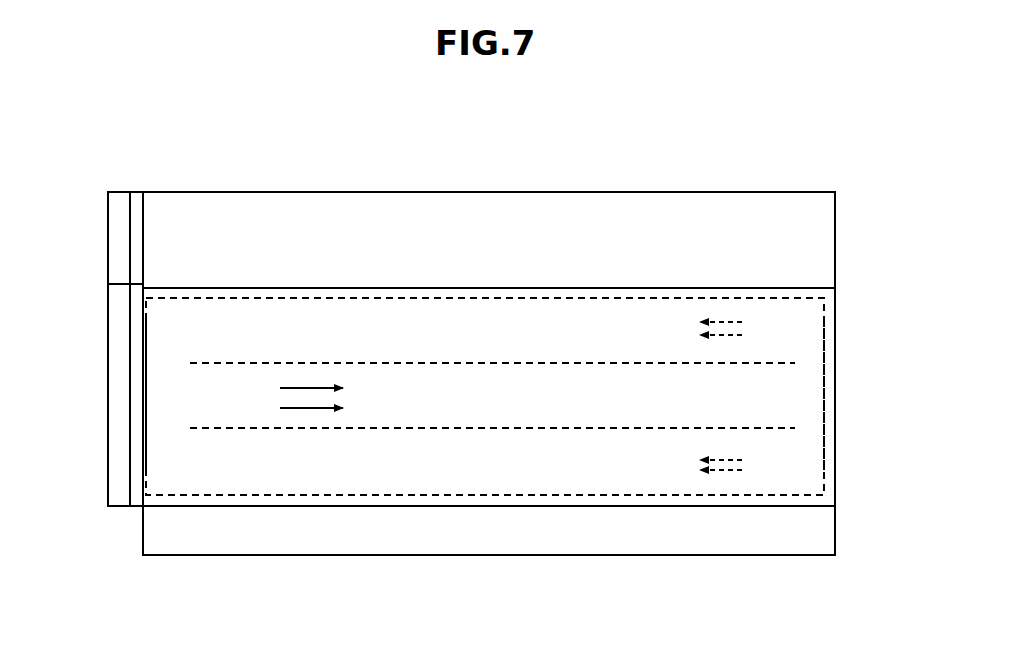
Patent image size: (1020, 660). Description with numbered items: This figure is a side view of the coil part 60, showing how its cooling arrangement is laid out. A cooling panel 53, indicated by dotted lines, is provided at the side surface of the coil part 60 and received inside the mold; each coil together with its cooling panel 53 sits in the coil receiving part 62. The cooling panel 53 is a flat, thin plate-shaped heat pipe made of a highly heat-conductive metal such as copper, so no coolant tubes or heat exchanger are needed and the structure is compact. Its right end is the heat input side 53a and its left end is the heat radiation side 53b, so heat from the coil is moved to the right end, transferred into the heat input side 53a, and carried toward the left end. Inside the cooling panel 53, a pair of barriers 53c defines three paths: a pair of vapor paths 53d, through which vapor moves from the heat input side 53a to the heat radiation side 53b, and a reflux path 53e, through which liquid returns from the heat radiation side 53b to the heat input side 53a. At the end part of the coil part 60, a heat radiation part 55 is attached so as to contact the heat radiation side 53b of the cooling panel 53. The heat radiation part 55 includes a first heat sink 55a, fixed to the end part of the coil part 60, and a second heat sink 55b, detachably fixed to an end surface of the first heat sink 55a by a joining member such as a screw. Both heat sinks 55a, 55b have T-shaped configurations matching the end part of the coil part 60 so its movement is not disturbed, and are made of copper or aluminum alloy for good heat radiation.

The coil part 60 is at (180, 125).
The heat radiation part 55 is at (106, 328).
The first heat sink 55a is at (143, 506).
The second heat sink 55b is at (108, 192).
The coil receiving part 62 is at (830, 535).
The cooling panel 53 is at (612, 292).
The heat input side 53a is at (818, 398).
The heat radiation side 53b is at (160, 382).
The barriers 53c is at (274, 363).
The vapor paths 53d is at (331, 320).
The reflux path 53e is at (413, 434).